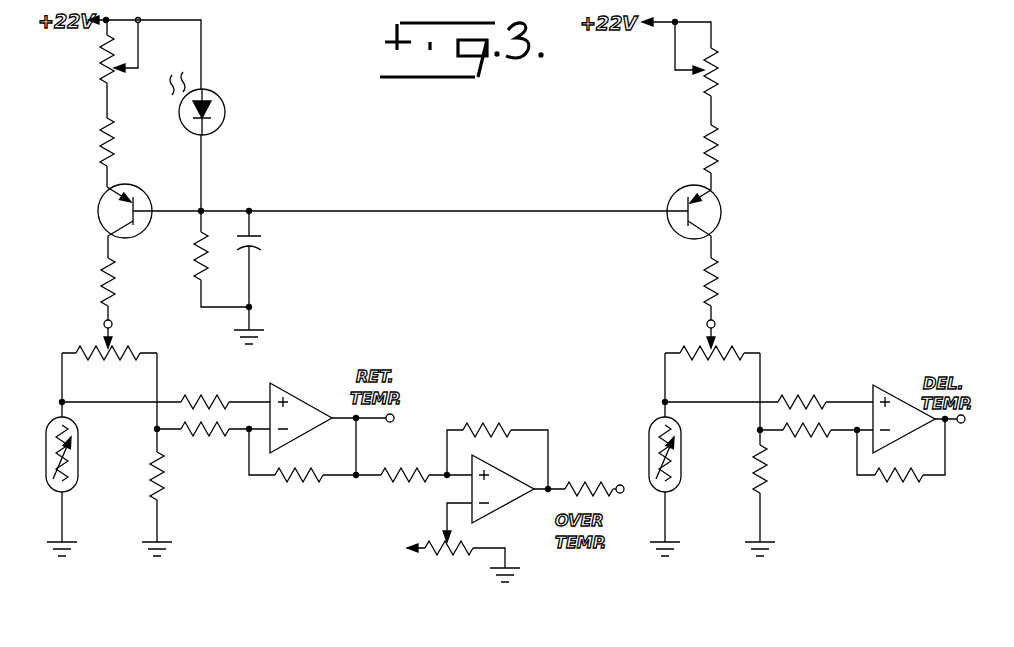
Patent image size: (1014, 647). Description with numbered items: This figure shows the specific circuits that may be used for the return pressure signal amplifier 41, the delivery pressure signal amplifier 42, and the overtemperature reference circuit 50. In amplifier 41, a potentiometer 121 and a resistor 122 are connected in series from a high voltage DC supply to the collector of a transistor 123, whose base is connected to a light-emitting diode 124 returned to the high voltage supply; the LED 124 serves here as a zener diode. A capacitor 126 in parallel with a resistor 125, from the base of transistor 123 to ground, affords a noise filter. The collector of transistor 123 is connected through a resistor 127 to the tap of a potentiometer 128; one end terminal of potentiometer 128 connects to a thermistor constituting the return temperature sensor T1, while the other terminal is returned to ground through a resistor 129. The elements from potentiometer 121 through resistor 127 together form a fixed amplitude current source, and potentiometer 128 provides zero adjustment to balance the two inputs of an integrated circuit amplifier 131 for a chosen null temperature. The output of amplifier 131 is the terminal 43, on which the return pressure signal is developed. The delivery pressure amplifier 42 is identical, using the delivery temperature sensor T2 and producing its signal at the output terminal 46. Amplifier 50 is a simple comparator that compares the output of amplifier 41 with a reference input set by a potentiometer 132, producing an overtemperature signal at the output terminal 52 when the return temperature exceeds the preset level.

The potentiometer 121 is at (100, 64).
The resistor 122 is at (100, 140).
The transistor 123 is at (128, 184).
The light-emitting diode 124 is at (225, 121).
The resistor 125 is at (196, 251).
The capacitor 126 is at (262, 246).
The resistor 127 is at (116, 302).
The potentiometer 128 is at (128, 349).
The resistor 129 is at (165, 486).
The integrated circuit amplifier 131 is at (278, 383).
The potentiometer 132 is at (459, 556).
The return pressure signal amplifier 41 is at (248, 374).
The delivery pressure signal amplifier 42 is at (786, 374).
The output terminal 43 is at (394, 418).
The output terminal 46 is at (960, 424).
The overtemperature reference circuit 50 is at (510, 419).
The output terminal 52 is at (621, 484).
The return temperature sensor T1 is at (78, 480).
The delivery temperature sensor T2 is at (696, 420).